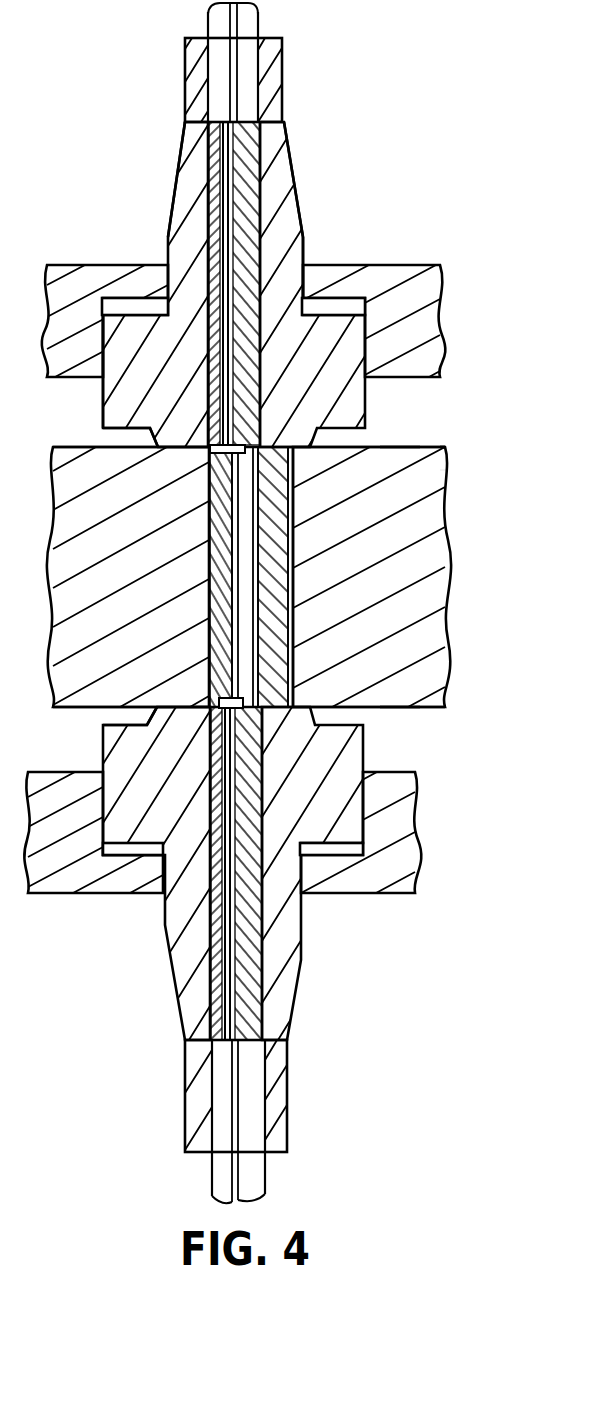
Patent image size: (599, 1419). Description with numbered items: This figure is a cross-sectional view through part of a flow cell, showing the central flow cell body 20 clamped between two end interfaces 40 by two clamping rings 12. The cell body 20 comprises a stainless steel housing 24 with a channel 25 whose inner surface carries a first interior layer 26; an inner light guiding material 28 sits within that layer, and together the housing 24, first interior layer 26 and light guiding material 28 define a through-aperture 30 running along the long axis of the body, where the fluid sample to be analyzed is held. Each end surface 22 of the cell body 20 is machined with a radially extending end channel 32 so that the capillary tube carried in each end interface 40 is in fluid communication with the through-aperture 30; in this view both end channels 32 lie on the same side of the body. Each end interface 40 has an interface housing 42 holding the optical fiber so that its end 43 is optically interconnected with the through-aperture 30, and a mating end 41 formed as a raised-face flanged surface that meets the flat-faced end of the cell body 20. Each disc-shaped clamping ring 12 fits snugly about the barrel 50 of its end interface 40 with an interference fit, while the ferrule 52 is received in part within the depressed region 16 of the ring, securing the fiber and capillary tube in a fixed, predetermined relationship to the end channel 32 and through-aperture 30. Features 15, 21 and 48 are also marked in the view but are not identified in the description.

The clamping ring 12 is at (442, 272).
The body 15 is at (313, 255).
The depressed region 16 is at (128, 297).
The flow cell body 20 is at (460, 466).
The seal 21 is at (450, 432).
The end surface 22 is at (390, 446).
The housing 24 is at (437, 592).
The channel 25 is at (300, 505).
The first interior layer 26 is at (273, 561).
The inner light guiding material 28 is at (253, 670).
The through-aperture 30 is at (247, 637).
The end channel 32 is at (216, 472).
The end interface 40 is at (311, 144).
The mating end 41 is at (90, 436).
The interface housing 42 is at (184, 162).
The end of the optical fiber 43 is at (258, 439).
The shoulder 48 is at (181, 718).
The barrel 50 is at (310, 218).
The ferrule 52 is at (104, 392).